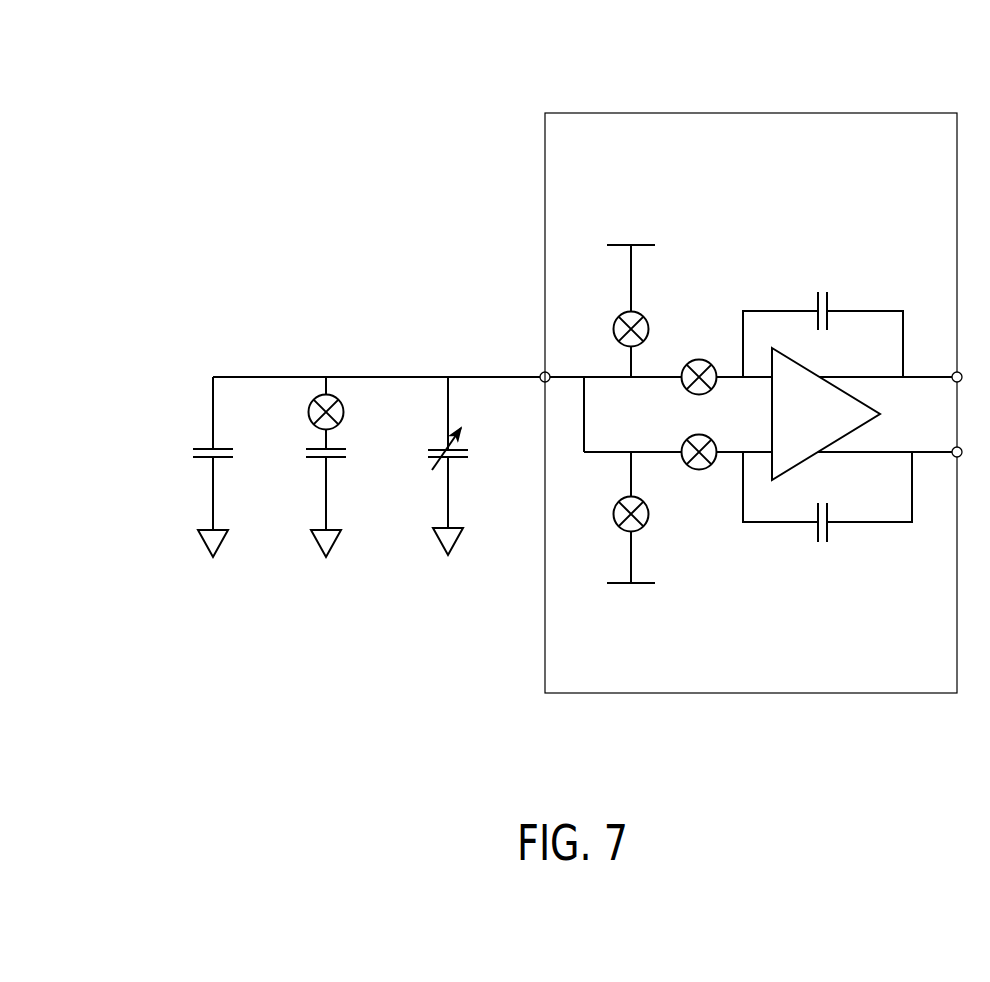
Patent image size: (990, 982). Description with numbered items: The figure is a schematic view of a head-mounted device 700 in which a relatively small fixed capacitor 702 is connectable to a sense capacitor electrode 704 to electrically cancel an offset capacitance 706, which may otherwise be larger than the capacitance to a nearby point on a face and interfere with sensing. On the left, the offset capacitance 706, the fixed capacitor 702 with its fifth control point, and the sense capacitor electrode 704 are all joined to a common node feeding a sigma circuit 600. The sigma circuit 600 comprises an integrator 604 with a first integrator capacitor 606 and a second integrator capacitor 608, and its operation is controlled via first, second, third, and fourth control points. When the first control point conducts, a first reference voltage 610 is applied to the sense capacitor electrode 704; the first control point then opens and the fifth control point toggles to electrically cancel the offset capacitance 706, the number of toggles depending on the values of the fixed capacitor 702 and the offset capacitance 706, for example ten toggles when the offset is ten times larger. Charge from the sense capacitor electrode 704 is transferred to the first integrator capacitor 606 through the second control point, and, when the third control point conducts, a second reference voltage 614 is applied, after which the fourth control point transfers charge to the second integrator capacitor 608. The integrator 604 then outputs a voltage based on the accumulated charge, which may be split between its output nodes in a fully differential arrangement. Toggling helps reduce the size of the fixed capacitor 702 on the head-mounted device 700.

The head-mounted device 700 is at (218, 84).
The offset capacitance 706 is at (188, 428).
The fixed capacitor 702 is at (361, 452).
The sense capacitor electrode 704 is at (484, 473).
The sigma circuit 600 is at (847, 147).
The first reference voltage 610 is at (703, 208).
The second reference voltage 614 is at (637, 634).
The first integrator capacitor 606 is at (829, 251).
The second integrator capacitor 608 is at (825, 604).
The integrator 604 is at (830, 424).